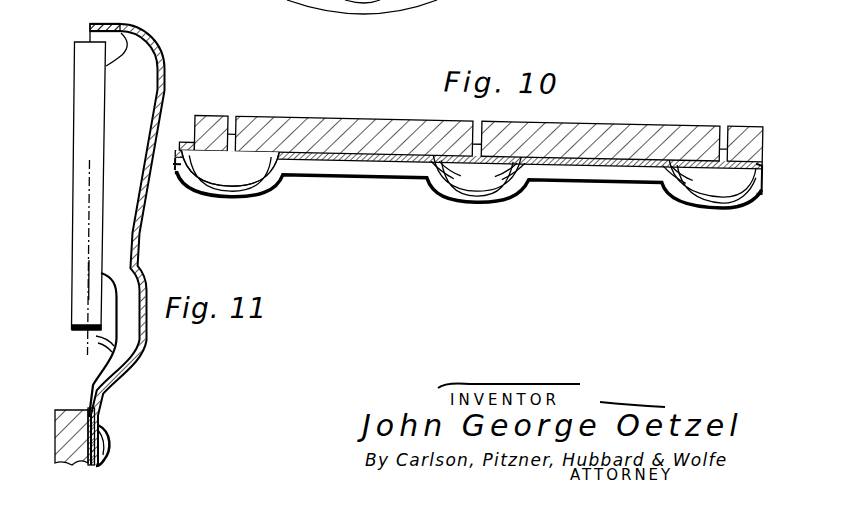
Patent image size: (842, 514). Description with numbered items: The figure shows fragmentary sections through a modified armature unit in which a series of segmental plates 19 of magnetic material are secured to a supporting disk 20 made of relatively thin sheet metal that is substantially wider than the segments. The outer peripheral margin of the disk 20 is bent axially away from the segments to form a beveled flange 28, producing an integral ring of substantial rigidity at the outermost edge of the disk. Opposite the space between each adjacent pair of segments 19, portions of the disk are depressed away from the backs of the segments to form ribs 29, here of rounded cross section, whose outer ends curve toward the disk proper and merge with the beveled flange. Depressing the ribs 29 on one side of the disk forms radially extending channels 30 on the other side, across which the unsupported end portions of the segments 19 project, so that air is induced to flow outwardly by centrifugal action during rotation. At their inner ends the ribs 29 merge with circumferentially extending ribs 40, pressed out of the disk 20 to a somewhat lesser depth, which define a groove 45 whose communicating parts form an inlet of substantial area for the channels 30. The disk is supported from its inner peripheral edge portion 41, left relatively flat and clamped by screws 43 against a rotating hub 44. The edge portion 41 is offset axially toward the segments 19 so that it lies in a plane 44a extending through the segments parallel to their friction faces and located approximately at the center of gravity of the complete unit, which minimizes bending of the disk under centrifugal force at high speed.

In FIG. 11, the segmental plates 19 is at (60, 221).
In FIG. 10, the segmental plates 19 is at (250, 119).
In FIG. 10, the supporting disk 20 is at (330, 159).
In FIG. 11, the beveled flange 28 is at (118, 29).
In FIG. 10, the beveled flange 28 is at (374, 175).
In FIG. 11, the ribs 29 is at (144, 236).
In FIG. 10, the ribs 29 is at (245, 196).
In FIG. 10, the channels 30 is at (522, 175).
In FIG. 11, the circumferentially extending ribs 40 is at (92, 350).
In FIG. 11, the inner peripheral edge portion 41 is at (93, 420).
In FIG. 11, the screws 43 is at (106, 438).
In FIG. 11, the rotating hub 44 is at (57, 426).
In FIG. 11, the plane 44a is at (88, 272).
In FIG. 11, the groove 45 is at (96, 336).